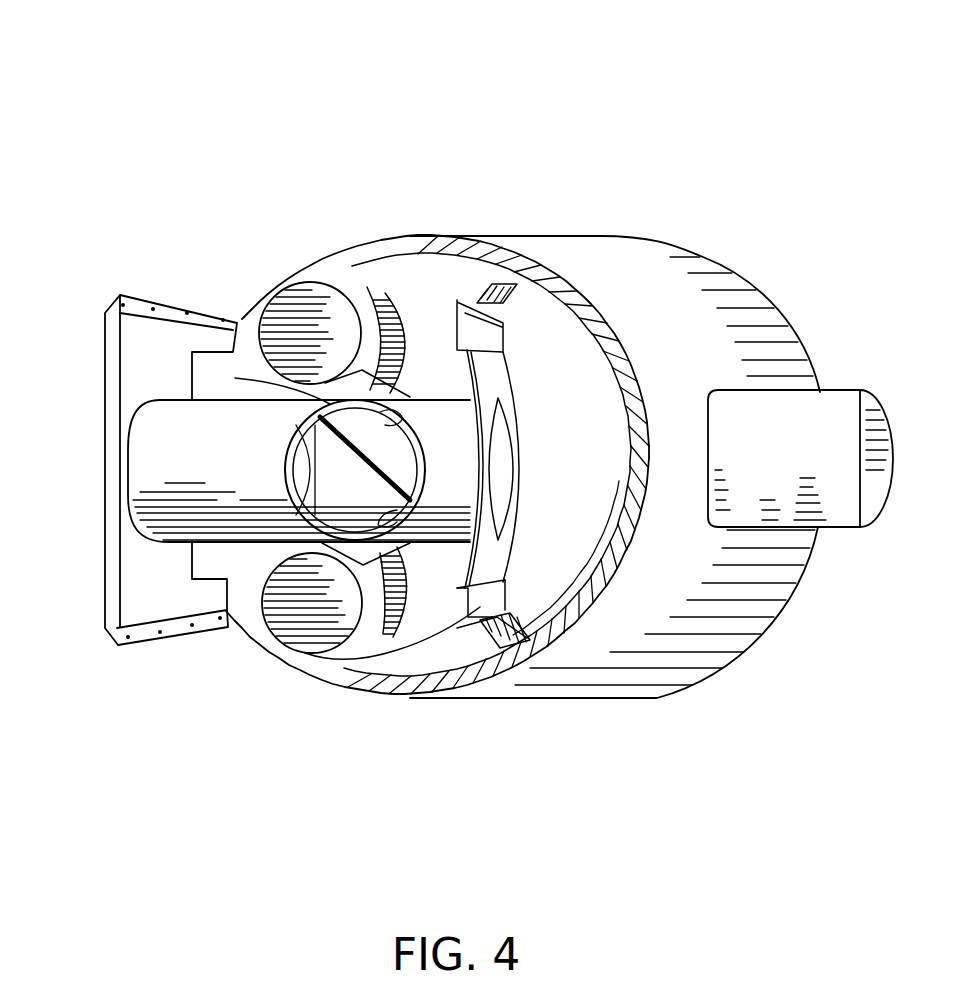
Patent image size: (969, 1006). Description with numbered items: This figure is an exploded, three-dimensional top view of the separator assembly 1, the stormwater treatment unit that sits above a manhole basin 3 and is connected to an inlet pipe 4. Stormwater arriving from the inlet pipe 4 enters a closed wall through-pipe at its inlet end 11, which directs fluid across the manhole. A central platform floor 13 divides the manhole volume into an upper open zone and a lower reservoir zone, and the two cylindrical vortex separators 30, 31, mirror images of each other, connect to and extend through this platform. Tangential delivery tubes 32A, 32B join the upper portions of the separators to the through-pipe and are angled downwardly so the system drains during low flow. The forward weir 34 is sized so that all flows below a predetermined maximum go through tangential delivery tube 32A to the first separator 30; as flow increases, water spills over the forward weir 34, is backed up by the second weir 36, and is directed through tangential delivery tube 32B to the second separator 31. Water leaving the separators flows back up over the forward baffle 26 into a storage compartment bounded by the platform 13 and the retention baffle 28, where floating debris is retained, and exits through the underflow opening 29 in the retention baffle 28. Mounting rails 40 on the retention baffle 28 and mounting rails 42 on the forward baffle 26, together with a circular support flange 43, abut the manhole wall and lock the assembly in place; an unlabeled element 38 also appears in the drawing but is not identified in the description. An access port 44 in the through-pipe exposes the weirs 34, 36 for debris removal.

The separator assembly 1 is at (461, 385).
The manhole basin 3 is at (615, 236).
The inlet pipe 4 is at (843, 389).
The inlet end 11 is at (505, 470).
The central platform floor 13 is at (360, 667).
The forward baffle 26 is at (510, 612).
The retention baffle 28 is at (137, 600).
The underflow opening 29 is at (208, 368).
The vortex separator 30 is at (300, 327).
The vortex separator 31 is at (317, 610).
The tangential delivery tube 32A is at (373, 390).
The tangential delivery tube 32B is at (377, 547).
The forward weir 34 is at (370, 457).
The second weir 36 is at (235, 378).
The annular flange 38 is at (492, 377).
The mounting rails 40 is at (107, 642).
The mounting rails 42 is at (466, 348).
The circular support flange 43 is at (478, 597).
The access port 44 is at (293, 456).